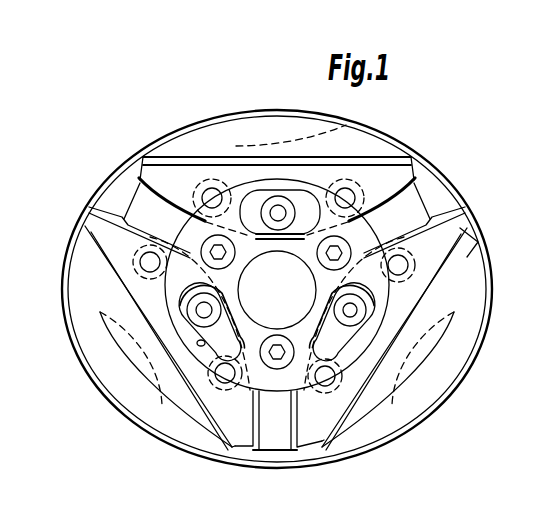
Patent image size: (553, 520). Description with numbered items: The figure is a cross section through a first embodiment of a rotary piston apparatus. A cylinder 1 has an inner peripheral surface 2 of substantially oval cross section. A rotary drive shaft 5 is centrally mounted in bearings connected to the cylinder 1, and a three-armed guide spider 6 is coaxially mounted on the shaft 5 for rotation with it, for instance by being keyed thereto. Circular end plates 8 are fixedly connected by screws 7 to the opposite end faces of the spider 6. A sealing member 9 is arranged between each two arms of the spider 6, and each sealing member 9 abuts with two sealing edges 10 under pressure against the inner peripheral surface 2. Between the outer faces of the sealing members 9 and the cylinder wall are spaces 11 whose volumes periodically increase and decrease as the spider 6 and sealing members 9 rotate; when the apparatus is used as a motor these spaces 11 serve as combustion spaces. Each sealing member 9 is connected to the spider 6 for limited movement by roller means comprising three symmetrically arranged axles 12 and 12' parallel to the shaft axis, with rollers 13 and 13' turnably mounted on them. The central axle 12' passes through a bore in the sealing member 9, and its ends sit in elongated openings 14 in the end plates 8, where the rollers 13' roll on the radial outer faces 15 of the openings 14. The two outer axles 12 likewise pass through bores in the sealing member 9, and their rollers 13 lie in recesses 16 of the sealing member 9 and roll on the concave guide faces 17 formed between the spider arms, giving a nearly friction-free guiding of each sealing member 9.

The cylinder 1 is at (462, 175).
The inner peripheral surface 2 is at (455, 200).
The rotary drive shaft 5 is at (273, 306).
The three-armed guide spider 6 is at (414, 212).
The screws 7 is at (208, 247).
The circular end plates 8 is at (288, 386).
The sealing member 9 is at (203, 142).
The sealing edges 10 is at (479, 242).
The spaces 11 is at (112, 378).
The outer axles 12 is at (292, 345).
The central axle 12' is at (375, 306).
The rollers 13 is at (332, 374).
The rollers on central axle 13' is at (341, 322).
The elongated openings 14 is at (222, 346).
The radial outer faces 15 is at (197, 344).
The recesses 16 is at (192, 192).
The concave guide faces 17 is at (140, 188).